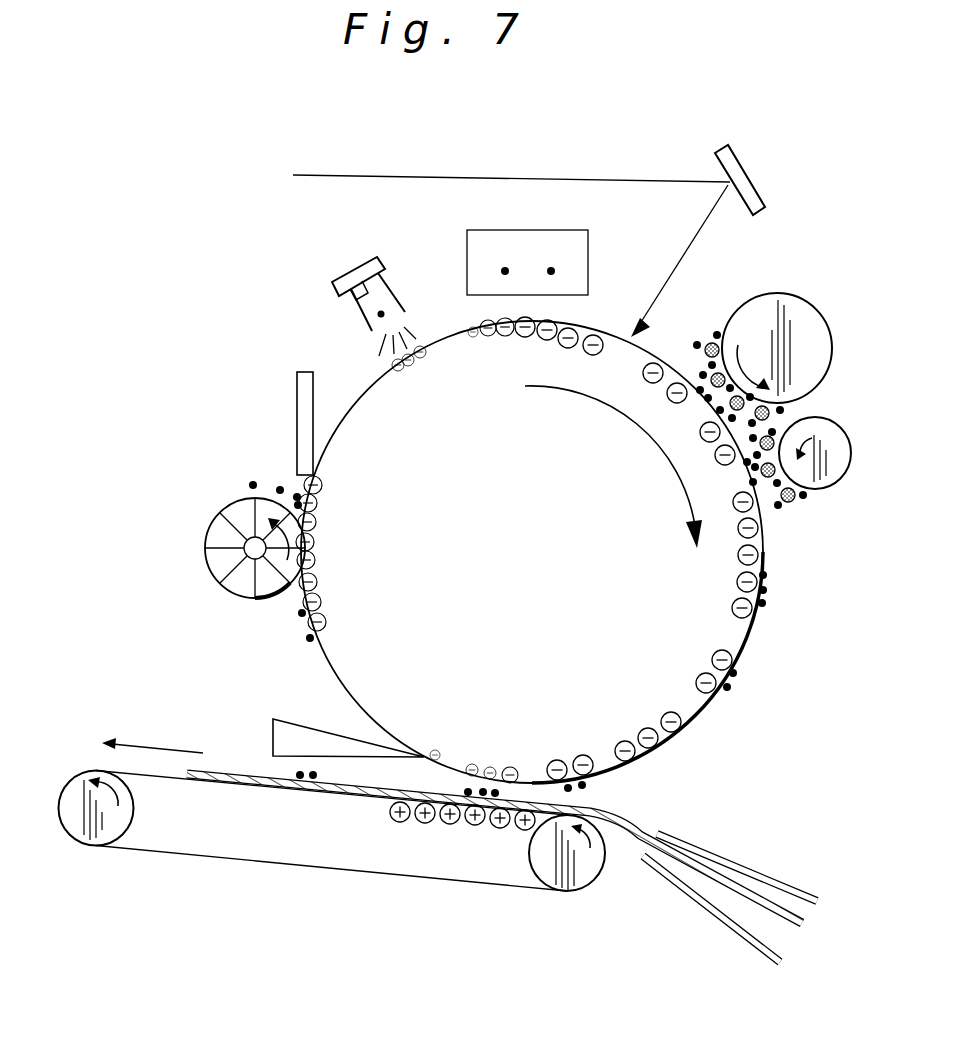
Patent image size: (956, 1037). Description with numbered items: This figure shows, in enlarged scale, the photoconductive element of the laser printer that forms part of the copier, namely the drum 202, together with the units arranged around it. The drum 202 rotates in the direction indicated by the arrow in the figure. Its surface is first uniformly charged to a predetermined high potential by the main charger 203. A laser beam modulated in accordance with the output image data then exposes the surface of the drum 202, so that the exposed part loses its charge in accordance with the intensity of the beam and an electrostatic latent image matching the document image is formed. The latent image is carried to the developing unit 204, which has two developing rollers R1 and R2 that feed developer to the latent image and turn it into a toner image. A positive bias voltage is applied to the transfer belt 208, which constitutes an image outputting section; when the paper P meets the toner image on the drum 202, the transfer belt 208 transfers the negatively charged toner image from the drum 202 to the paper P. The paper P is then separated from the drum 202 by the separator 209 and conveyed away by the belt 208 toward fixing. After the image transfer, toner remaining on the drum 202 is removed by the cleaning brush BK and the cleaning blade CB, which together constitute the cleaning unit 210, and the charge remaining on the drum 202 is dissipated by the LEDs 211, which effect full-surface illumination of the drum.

The drum 202 is at (532, 552).
The main charger 203 is at (468, 245).
The developing unit 204 is at (826, 392).
The transfer belt 208 is at (416, 872).
The separator 209 is at (283, 740).
The cleaning unit 210 is at (229, 473).
The LEDs 211 is at (355, 267).
The developing roller R1 is at (797, 322).
The developing roller R2 is at (830, 447).
The cleaning blade CB is at (300, 398).
The cleaning brush BK is at (200, 533).
The paper P is at (632, 825).